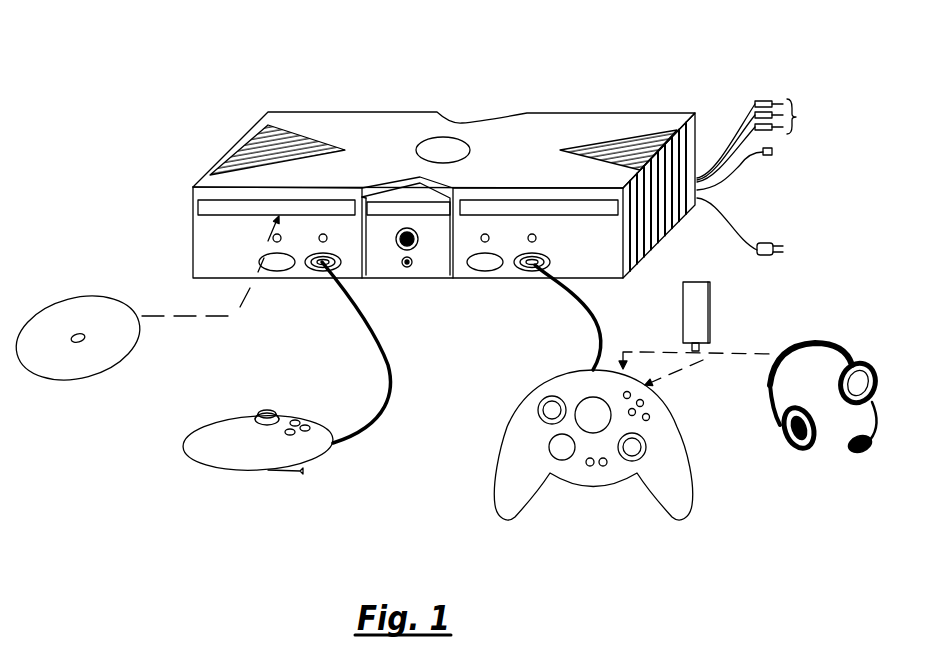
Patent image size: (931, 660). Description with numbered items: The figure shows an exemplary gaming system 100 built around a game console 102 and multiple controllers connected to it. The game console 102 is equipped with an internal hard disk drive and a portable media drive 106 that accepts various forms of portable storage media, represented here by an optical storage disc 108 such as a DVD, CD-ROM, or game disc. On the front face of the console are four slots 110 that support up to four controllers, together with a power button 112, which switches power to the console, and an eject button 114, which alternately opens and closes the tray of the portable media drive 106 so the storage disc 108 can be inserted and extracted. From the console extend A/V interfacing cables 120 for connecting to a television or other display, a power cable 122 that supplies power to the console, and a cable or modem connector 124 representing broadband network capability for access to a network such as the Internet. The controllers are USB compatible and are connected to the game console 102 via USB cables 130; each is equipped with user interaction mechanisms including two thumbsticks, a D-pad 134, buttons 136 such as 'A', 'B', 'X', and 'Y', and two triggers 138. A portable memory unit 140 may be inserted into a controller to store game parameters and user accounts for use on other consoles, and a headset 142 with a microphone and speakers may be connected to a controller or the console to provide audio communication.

The gaming system 100 is at (592, 33).
The game console 102 is at (303, 113).
The portable media drive 106 is at (210, 205).
The optical storage disc 108 is at (90, 373).
The slots 110 is at (320, 269).
The power button 112 is at (408, 268).
The eject button 114 is at (407, 228).
The A/V interfacing cables 120 is at (760, 100).
The power cable 122 is at (758, 252).
The cable or modem connector 124 is at (733, 172).
The USB cables 130 is at (386, 358).
The D-pad 134 is at (548, 446).
The buttons 136 is at (645, 403).
The triggers 138 is at (305, 470).
The memory unit 140 is at (713, 312).
The headset 142 is at (835, 338).